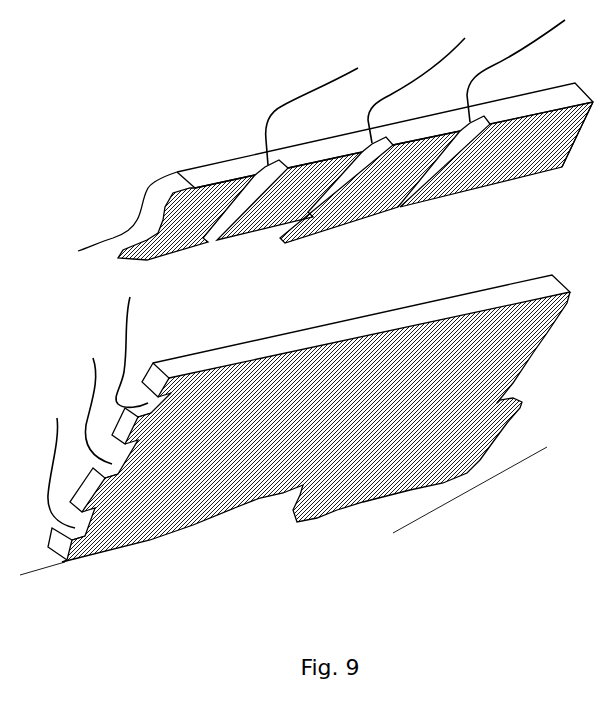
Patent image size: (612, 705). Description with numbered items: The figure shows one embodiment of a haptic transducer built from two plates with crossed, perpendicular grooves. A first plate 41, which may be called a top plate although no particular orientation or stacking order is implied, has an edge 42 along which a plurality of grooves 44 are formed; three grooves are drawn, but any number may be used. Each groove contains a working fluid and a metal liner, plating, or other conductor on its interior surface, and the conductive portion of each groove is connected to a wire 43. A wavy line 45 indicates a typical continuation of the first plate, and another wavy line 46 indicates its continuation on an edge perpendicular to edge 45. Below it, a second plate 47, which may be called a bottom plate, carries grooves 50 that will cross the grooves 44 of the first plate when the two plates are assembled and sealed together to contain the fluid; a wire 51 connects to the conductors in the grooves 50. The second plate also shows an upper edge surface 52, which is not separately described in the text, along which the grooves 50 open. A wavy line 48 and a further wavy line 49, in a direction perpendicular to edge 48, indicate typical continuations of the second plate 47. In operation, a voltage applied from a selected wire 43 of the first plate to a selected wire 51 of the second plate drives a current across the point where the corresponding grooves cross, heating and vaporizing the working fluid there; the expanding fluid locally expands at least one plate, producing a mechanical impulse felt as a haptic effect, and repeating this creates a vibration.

The first plate 41 is at (572, 131).
The edge of the first plate 42 is at (545, 101).
The wire 43 is at (431, 66).
The groove 44 is at (243, 174).
The wavy line 45 is at (147, 220).
The wavy line 46 is at (477, 188).
The second plate 47 is at (548, 338).
The wavy line 48 is at (514, 417).
The wavy line 49 is at (238, 510).
The groove 50 is at (103, 470).
The wire 51 is at (92, 388).
The top edge surface of second plate 52 is at (287, 347).